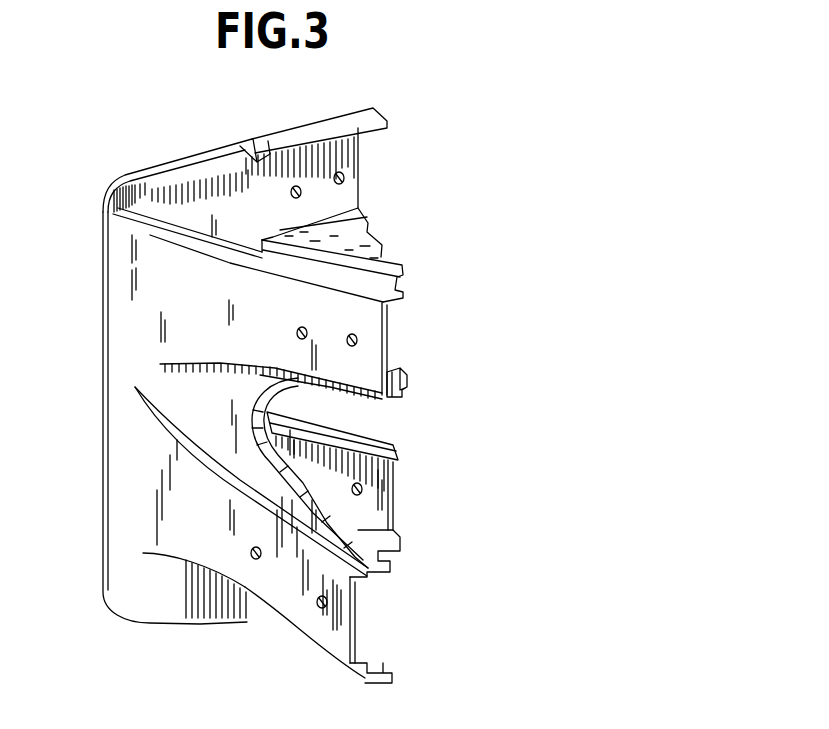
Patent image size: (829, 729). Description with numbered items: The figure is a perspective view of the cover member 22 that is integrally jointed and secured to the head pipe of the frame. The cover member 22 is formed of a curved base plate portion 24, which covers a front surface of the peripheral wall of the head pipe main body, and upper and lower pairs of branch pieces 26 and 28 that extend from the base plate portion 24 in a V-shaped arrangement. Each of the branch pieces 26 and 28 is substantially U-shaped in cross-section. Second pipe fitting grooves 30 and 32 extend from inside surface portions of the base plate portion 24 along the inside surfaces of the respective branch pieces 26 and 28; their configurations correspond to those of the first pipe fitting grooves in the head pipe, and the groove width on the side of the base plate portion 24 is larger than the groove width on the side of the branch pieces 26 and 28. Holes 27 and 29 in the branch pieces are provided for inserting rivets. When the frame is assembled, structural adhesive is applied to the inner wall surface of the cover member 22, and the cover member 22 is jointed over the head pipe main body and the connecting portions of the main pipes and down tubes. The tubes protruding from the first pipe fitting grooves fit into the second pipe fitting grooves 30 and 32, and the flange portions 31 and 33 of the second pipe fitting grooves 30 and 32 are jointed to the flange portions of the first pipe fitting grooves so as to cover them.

The cover member 22 is at (102, 445).
The base plate portion 24 is at (135, 385).
The upper branch pieces 26 is at (388, 116).
The holes for inserting rivets 27 is at (302, 197).
The lower branch pieces 28 is at (398, 496).
The holes for inserting rivets 29 is at (362, 486).
The second pipe fitting groove 30 is at (363, 250).
The flange portion 31 is at (300, 135).
The second pipe fitting groove 32 is at (355, 567).
The flange portion 33 is at (376, 445).